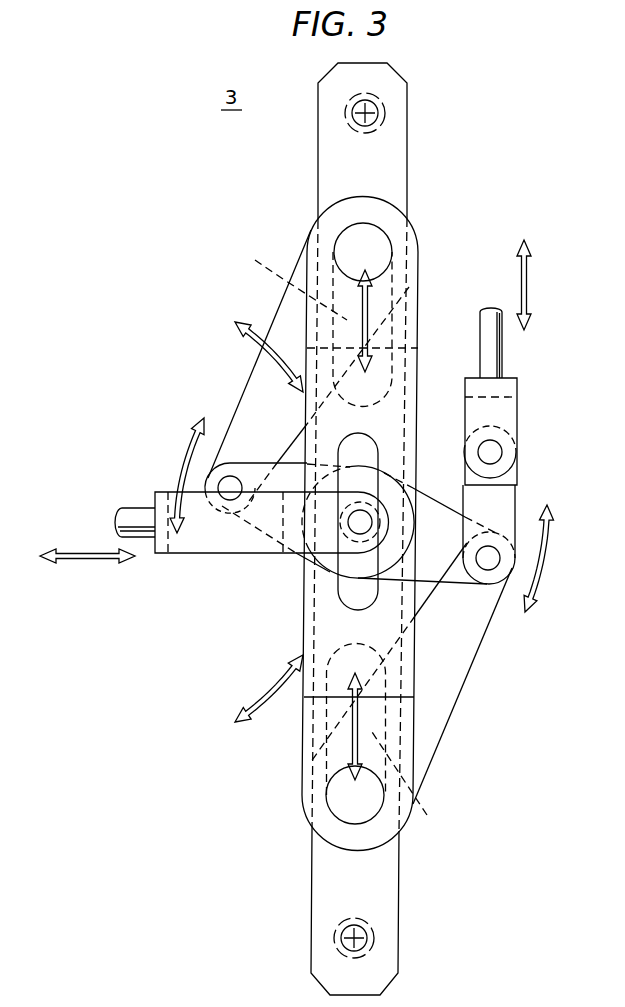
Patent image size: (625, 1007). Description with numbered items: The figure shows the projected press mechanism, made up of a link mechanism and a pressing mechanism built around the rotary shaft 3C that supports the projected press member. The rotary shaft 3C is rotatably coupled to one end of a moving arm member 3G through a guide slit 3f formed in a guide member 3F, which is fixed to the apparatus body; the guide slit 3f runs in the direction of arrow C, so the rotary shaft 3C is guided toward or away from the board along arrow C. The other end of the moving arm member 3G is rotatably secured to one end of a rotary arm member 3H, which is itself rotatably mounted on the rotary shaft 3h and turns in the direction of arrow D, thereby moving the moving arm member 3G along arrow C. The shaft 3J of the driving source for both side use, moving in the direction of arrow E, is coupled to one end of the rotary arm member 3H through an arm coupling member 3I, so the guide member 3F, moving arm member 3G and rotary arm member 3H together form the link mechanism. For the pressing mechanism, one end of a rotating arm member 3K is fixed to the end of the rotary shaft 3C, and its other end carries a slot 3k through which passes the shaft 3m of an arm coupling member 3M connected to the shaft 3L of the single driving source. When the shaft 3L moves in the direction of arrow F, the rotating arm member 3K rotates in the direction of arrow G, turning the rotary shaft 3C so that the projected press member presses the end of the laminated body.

The guide member 3F is at (322, 188).
The projected press member rotating arm member 3K is at (392, 404).
The rotary shaft 3C is at (382, 244).
The slot 3k is at (355, 583).
The guide slit 3f is at (341, 541).
The moving arm member 3G is at (283, 318).
The rotary arm member 3H is at (250, 470).
The arm coupling member 3M is at (200, 540).
The shaft of the single driving source 3L is at (130, 510).
The rotary shaft 3h is at (363, 520).
The shaft of the arm coupling member 3m is at (366, 527).
The arm coupling member 3I is at (505, 412).
The shaft of the driving source for both side use 3J is at (498, 340).
The arrow C is at (366, 525).
The arrow E is at (533, 285).
The arrow F is at (87, 569).
The arrow G is at (253, 520).
The arrow D is at (365, 515).